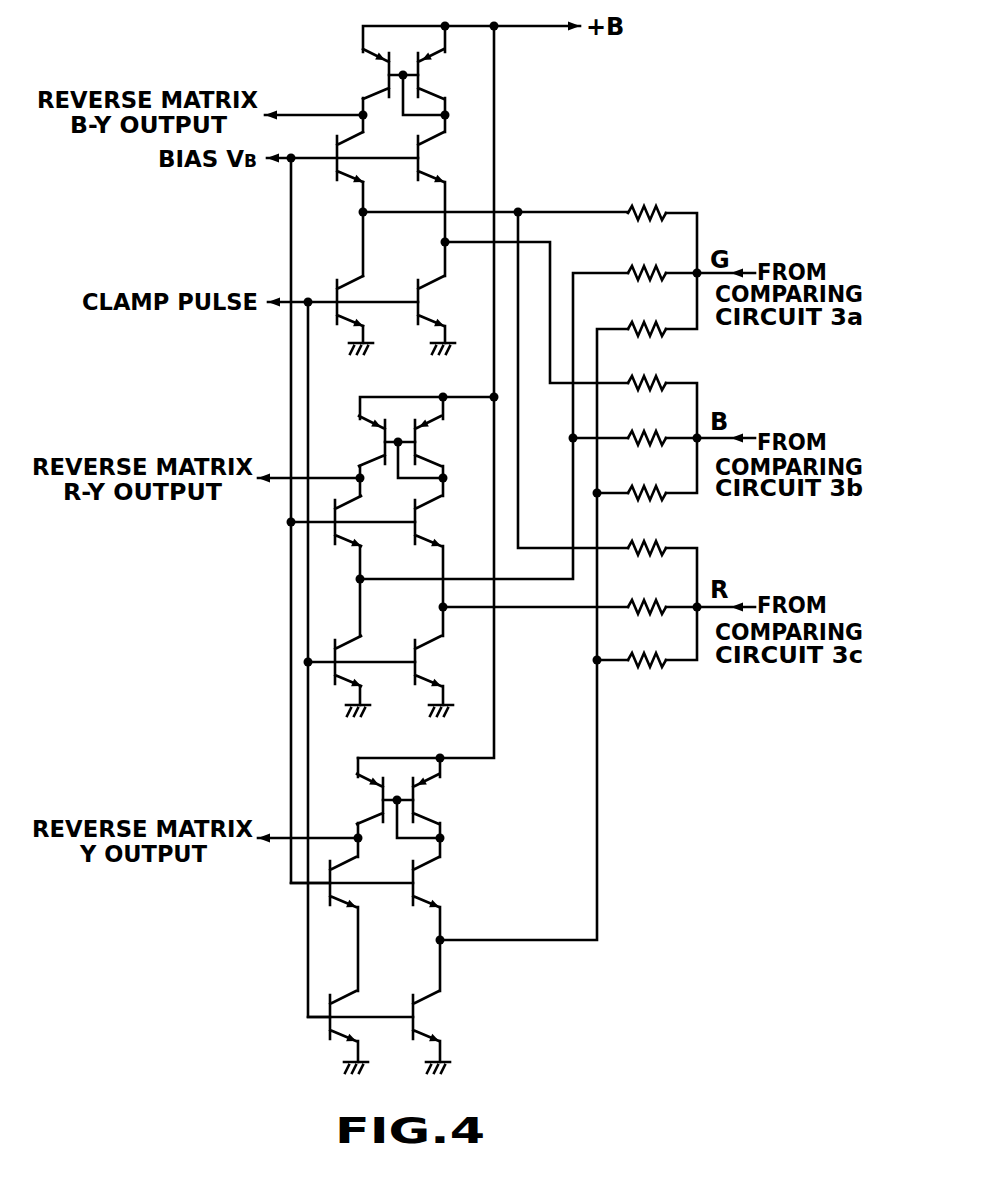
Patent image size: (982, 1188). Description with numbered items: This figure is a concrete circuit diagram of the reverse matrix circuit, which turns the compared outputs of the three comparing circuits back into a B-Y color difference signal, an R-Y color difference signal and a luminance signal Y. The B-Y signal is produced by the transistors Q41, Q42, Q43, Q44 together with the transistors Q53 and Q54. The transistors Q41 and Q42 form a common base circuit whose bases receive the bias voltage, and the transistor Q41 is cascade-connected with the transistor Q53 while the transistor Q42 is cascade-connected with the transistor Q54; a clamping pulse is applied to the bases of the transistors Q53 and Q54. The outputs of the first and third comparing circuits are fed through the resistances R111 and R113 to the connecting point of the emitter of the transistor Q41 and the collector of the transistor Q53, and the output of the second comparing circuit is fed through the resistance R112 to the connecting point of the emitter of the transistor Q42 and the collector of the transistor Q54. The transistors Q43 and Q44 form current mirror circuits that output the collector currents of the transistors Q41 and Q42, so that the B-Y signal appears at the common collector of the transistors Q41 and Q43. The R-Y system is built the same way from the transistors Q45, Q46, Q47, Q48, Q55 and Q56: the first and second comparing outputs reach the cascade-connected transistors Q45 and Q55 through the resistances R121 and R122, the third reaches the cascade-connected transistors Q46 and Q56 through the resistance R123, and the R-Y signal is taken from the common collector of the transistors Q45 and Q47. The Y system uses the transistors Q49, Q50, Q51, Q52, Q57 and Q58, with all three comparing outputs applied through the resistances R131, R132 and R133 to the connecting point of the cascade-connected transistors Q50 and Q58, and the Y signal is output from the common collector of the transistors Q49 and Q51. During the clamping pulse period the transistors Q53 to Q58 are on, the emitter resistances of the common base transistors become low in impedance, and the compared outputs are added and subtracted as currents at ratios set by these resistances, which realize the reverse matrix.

The transistor Q41 is at (373, 155).
The transistor Q42 is at (445, 157).
The transistor Q43 is at (362, 74).
The transistor Q44 is at (445, 74).
The transistor Q45 is at (372, 520).
The transistor Q46 is at (443, 521).
The transistor Q47 is at (358, 441).
The transistor Q48 is at (443, 441).
The transistor Q49 is at (368, 880).
The transistor Q50 is at (441, 882).
The transistor Q51 is at (355, 799).
The transistor Q52 is at (441, 799).
The transistor Q53 is at (374, 298).
The transistor Q54 is at (445, 301).
The transistor Q55 is at (372, 659).
The transistor Q56 is at (443, 661).
The transistor Q57 is at (368, 1015).
The transistor Q58 is at (441, 1016).
The resistance R111 is at (646, 199).
The resistance R121 is at (646, 258).
The resistance R131 is at (646, 314).
The resistance R112 is at (646, 368).
The resistance R122 is at (646, 424).
The resistance R132 is at (646, 480).
The resistance R113 is at (646, 535).
The resistance R123 is at (646, 592).
The resistance R133 is at (646, 646).